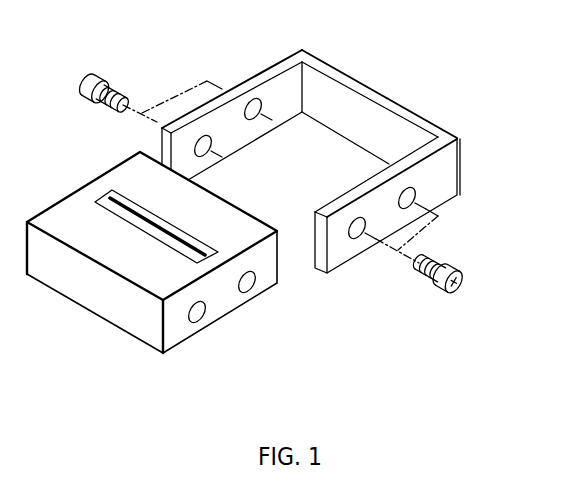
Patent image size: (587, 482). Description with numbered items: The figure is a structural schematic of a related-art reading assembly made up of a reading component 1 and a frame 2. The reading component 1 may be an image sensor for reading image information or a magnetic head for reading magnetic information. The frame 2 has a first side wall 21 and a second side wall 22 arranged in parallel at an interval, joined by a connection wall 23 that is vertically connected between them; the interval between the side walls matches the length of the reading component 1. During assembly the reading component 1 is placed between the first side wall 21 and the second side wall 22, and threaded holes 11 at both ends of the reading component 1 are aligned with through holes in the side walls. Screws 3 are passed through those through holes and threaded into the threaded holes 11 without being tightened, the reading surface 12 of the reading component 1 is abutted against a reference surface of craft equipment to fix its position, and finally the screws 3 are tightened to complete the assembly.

The reading component 1 is at (110, 320).
The threaded holes 11 is at (254, 286).
The reading surface 12 is at (102, 194).
The frame 2 is at (348, 168).
The first side wall 21 is at (270, 6).
The second side wall 22 is at (413, 160).
The connection wall 23 is at (447, 38).
The screws 3 is at (145, 42).